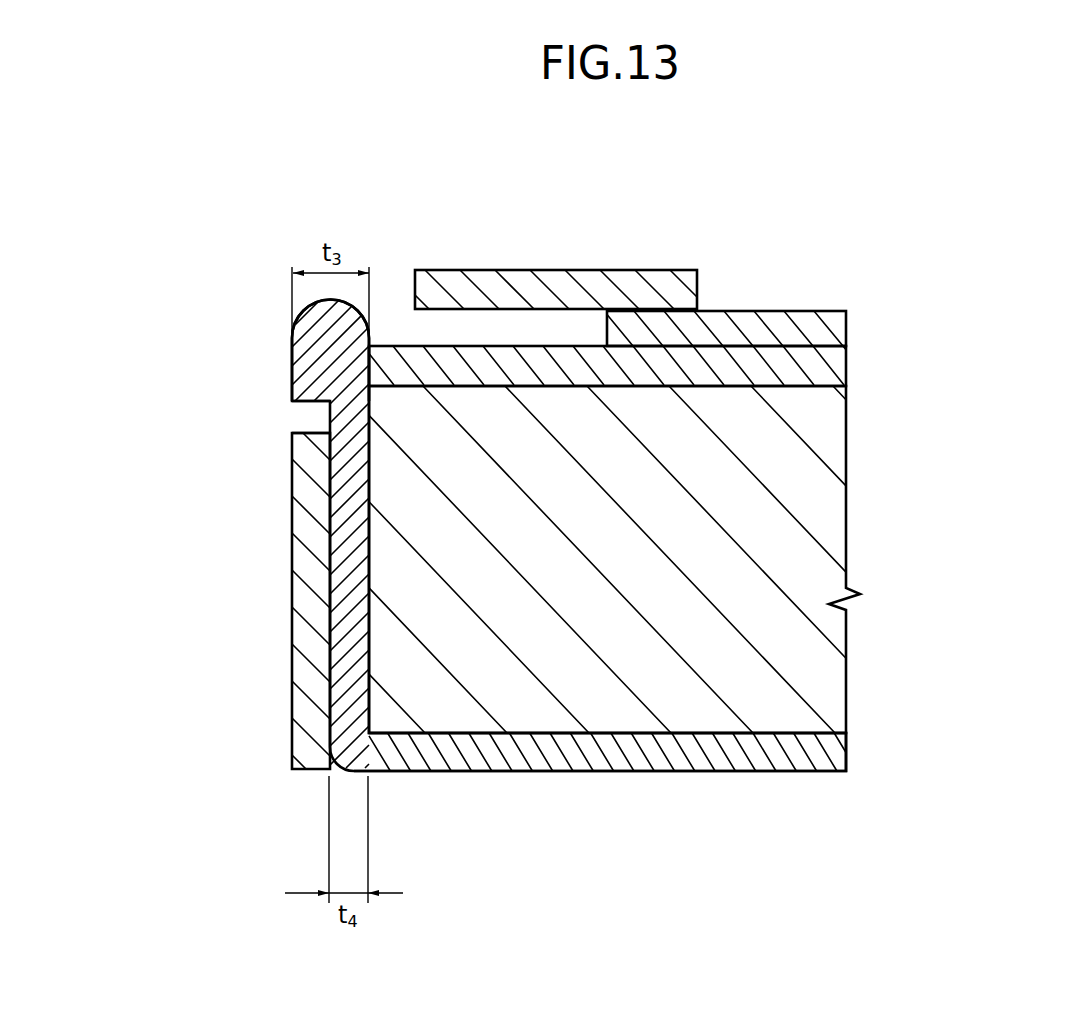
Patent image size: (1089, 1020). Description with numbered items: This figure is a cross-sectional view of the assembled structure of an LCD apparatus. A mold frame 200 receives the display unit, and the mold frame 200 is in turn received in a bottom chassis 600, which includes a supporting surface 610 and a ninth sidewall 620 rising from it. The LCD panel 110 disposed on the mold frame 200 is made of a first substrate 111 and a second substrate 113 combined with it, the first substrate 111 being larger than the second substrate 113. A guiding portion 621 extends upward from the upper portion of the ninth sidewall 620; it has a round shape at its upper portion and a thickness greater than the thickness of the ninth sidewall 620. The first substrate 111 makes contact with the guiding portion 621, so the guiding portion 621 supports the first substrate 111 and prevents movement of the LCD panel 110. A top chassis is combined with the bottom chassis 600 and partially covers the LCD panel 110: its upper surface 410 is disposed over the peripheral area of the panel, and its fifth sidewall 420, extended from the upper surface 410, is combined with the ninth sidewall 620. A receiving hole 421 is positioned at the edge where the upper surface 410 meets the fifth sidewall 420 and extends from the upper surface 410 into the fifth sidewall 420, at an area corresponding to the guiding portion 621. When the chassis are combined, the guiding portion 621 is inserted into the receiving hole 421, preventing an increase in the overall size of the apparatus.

The LCD panel 110 is at (711, 349).
The first substrate 111 is at (832, 362).
The second substrate 113 is at (832, 332).
The mold frame 200 is at (824, 527).
The upper surface 410 is at (588, 284).
The fifth sidewall 420 is at (302, 598).
The receiving hole 421 is at (390, 288).
The bottom chassis 600 is at (513, 601).
The supporting surface 610 is at (385, 850).
The ninth sidewall 620 is at (513, 571).
The guiding portion 621 is at (303, 341).